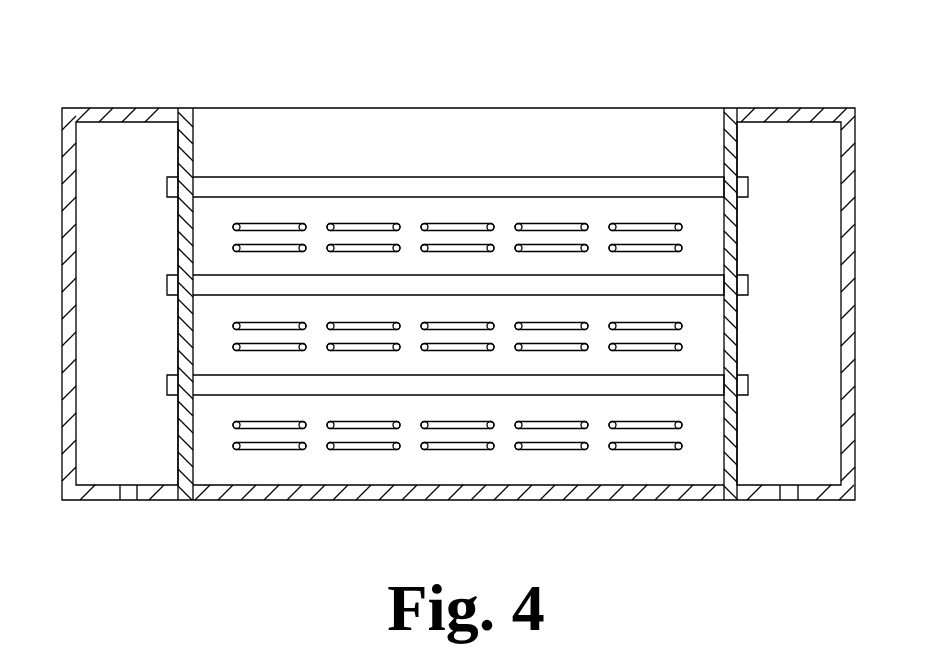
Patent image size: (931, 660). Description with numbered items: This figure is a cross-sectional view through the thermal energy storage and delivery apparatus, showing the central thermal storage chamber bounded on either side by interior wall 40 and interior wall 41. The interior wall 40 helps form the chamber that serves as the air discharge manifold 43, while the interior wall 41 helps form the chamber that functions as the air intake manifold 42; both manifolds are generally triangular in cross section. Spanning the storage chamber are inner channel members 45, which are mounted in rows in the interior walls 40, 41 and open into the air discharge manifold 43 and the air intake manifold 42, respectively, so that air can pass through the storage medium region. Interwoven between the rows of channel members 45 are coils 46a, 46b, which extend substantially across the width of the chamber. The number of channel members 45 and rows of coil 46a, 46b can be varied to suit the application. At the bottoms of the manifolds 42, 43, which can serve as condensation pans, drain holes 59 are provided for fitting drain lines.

The interior wall 40 is at (178, 142).
The interior wall 41 is at (738, 156).
The air intake manifold 42 is at (111, 298).
The air discharge manifold 43 is at (785, 305).
The inner channel members 45 is at (603, 373).
The coil 46a is at (671, 453).
The coil 46b is at (270, 222).
The drain holes 59 is at (124, 500).